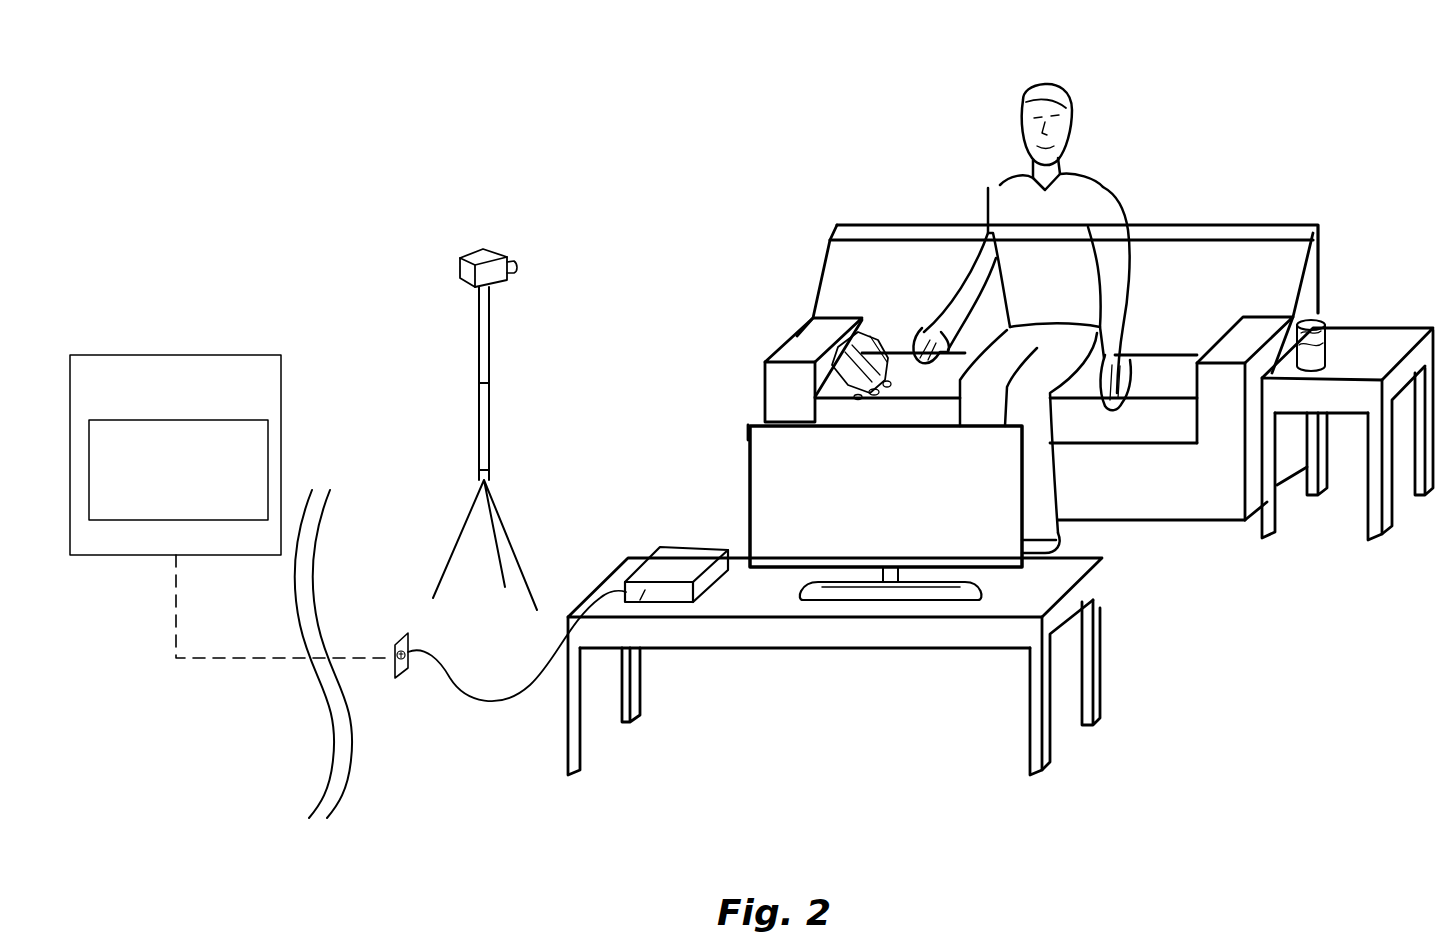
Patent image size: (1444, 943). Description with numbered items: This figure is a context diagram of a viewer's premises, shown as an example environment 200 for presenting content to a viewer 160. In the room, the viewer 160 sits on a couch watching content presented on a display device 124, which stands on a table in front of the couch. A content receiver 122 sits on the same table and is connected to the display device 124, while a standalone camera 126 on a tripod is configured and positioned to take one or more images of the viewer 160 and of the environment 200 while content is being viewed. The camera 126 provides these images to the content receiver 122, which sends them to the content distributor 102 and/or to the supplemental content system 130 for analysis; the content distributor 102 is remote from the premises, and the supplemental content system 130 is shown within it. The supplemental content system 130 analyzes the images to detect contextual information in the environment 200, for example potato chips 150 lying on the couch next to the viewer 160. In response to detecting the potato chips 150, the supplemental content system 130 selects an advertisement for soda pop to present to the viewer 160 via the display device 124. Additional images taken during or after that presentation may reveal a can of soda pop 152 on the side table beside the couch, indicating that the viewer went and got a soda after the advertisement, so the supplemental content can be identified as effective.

The environment 200 is at (1285, 55).
The content distributor 102 is at (175, 455).
The supplemental content system 130 is at (178, 470).
The camera 126 is at (480, 250).
The content receiver 122 is at (658, 556).
The display device 124 is at (749, 476).
The potato chips 150 is at (797, 336).
The can of soda pop 152 is at (1315, 345).
The viewer 160 is at (1003, 194).